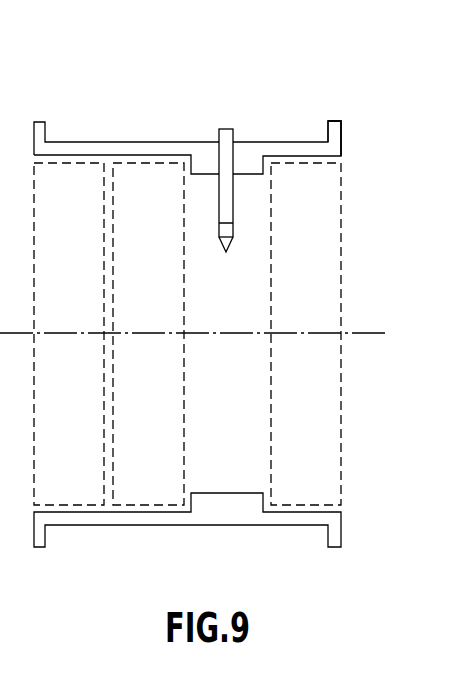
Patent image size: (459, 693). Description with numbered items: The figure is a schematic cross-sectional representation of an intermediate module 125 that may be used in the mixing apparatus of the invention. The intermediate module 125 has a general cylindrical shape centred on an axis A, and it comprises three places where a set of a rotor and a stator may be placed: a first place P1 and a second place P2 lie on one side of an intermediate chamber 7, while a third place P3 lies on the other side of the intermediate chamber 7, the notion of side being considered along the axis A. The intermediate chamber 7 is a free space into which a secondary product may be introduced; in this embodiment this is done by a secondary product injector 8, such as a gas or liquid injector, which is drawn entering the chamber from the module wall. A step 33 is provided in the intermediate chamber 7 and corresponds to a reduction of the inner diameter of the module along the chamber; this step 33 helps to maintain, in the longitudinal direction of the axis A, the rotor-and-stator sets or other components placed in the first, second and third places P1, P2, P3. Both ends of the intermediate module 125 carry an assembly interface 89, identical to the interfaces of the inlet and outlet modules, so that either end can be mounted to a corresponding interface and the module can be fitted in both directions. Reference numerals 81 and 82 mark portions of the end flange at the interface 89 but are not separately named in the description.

The intermediate module 125 is at (223, 281).
The step 33 is at (203, 158).
The secondary product injector 8 is at (229, 188).
The flange 81 is at (333, 122).
The assembly interface 89 is at (350, 130).
The flange lower portion 82 is at (341, 143).
The intermediate chamber 7 is at (234, 488).
The first place P1 is at (86, 488).
The second place P2 is at (164, 488).
The third place P3 is at (326, 488).
The axis A is at (196, 320).